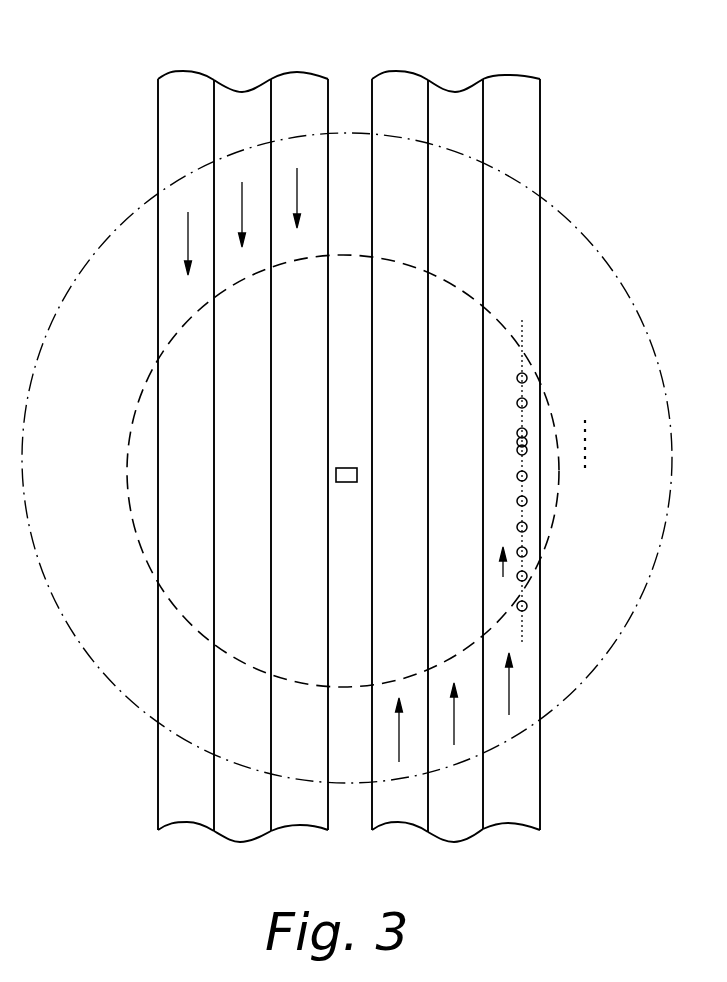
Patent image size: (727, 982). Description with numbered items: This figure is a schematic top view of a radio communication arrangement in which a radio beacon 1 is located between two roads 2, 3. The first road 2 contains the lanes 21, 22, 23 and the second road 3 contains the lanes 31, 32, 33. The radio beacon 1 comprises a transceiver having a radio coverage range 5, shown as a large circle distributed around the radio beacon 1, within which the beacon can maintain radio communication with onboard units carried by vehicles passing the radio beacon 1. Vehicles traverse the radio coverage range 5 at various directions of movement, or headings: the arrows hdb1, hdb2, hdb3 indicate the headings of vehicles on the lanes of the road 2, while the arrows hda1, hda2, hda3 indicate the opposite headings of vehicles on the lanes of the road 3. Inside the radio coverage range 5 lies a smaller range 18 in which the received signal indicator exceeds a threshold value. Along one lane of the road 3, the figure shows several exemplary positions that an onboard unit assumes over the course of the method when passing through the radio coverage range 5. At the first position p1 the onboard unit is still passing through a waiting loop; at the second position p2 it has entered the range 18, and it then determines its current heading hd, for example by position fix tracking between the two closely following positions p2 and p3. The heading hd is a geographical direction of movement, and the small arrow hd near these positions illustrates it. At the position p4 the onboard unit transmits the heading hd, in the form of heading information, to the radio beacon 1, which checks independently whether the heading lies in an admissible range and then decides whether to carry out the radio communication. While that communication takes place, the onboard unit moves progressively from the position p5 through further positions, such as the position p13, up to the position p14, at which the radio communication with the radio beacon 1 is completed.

The radio beacon 1 is at (341, 467).
The road 2 is at (209, 433).
The road 3 is at (486, 423).
The lane 21 is at (185, 793).
The lane 22 is at (233, 811).
The lane 23 is at (297, 815).
The lane 31 is at (398, 120).
The lane 32 is at (468, 140).
The lane 33 is at (508, 149).
The radio coverage range 5 is at (80, 643).
The range of exceeding the threshold value 18 is at (135, 529).
The heading hd is at (500, 570).
The heading hdb1 is at (188, 235).
The heading hdb2 is at (242, 193).
The heading hdb3 is at (297, 178).
The heading hda1 is at (401, 753).
The heading hda2 is at (456, 727).
The heading hda3 is at (511, 685).
The first position p1 is at (527, 606).
The second position p2 is at (527, 576).
The position p3 is at (527, 552).
The position p4 is at (527, 527).
The position p5 is at (527, 501).
The position p13 is at (527, 402).
The position p14 is at (527, 376).